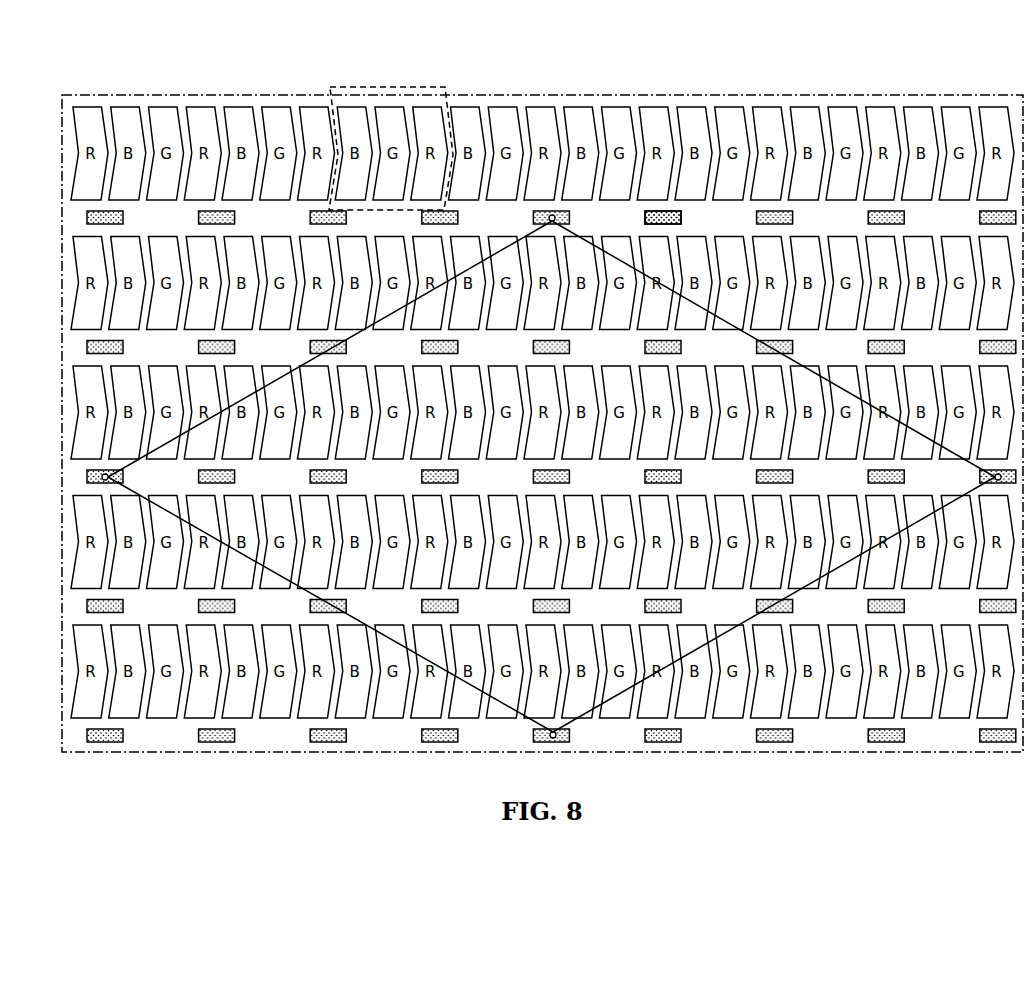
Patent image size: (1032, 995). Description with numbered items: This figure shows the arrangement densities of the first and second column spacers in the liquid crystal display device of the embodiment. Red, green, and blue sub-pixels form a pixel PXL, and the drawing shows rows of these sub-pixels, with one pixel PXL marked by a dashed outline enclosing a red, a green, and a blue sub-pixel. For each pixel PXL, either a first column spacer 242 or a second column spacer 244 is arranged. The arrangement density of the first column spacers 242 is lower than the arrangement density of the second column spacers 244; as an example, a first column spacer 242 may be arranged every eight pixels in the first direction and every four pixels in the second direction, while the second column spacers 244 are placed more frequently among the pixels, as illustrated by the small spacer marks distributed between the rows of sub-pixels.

The first column spacer 242 is at (552, 214).
The second column spacer 244 is at (662, 210).
The pixel PXL is at (382, 87).